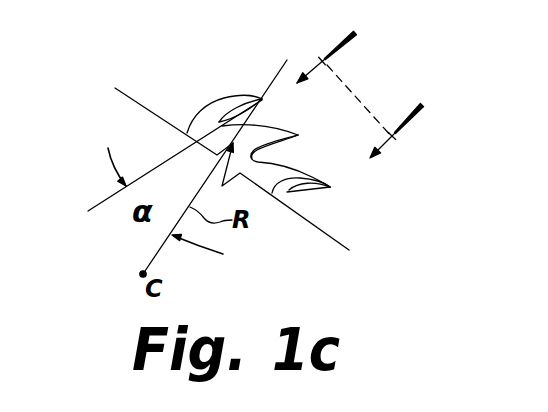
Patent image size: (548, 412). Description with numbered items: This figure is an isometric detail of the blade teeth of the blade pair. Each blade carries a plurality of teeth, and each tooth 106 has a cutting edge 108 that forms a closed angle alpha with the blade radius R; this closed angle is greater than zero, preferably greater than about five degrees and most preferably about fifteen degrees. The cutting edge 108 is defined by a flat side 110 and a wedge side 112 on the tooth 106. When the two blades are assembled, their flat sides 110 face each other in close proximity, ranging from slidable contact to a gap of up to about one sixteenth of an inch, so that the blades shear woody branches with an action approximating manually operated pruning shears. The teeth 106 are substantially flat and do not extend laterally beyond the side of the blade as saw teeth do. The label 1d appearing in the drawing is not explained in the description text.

The tooth 106 is at (203, 106).
The cutting edge 108 is at (309, 189).
The flat side 110 is at (311, 138).
The wedge side 112 is at (294, 193).
The tooth dimension / spacing 1d is at (350, 114).